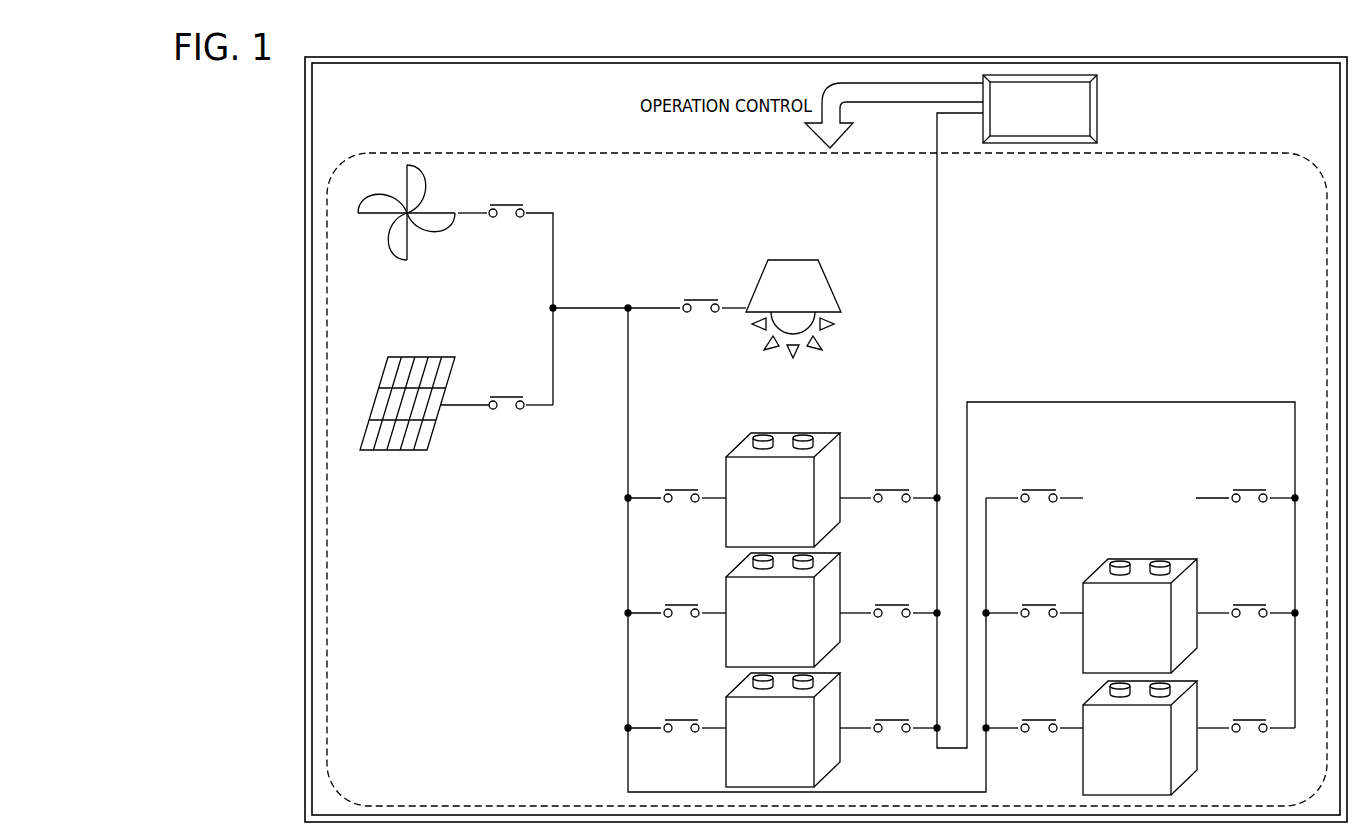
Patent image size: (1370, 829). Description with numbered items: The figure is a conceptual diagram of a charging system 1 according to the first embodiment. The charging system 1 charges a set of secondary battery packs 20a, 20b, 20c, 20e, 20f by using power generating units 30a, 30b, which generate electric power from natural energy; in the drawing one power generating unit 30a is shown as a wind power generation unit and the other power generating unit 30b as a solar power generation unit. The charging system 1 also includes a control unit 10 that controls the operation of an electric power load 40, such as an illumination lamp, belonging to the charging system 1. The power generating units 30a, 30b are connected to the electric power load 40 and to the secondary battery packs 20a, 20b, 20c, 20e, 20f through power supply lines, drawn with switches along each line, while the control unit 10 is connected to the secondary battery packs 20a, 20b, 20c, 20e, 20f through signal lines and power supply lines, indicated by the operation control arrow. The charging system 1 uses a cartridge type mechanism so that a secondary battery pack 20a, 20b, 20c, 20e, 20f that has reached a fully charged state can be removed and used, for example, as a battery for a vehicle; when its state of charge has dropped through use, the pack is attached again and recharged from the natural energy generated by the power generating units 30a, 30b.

The charging system 1 is at (437, 58).
The control unit 10 is at (1100, 98).
The secondary battery pack 20a is at (842, 468).
The secondary battery pack 20b is at (842, 582).
The secondary battery pack 20c is at (842, 696).
The secondary battery pack 20e is at (1199, 580).
The secondary battery pack 20f is at (1199, 702).
The power generating unit 30a is at (418, 196).
The power generating unit 30b is at (440, 357).
The electric power load 40 is at (805, 260).